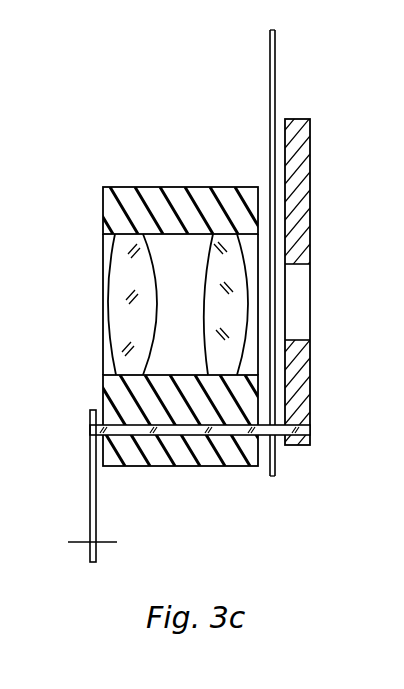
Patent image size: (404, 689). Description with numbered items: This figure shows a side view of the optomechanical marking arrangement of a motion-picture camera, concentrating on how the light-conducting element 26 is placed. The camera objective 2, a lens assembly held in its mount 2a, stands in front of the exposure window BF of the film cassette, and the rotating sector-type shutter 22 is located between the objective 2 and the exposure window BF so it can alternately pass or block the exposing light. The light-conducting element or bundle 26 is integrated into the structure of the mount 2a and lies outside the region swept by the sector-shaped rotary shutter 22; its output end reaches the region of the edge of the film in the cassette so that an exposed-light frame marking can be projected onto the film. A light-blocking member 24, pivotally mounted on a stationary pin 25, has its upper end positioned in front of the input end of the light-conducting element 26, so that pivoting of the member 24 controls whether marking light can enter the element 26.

The camera objective 2 is at (183, 193).
The mount assembly 2a is at (125, 388).
The rotating sector-type shutter 22 is at (270, 88).
The exposure window BF is at (300, 274).
The light-blocking member 24 is at (92, 490).
The stationary pin 25 is at (72, 544).
The light-conducting element 26 is at (219, 440).